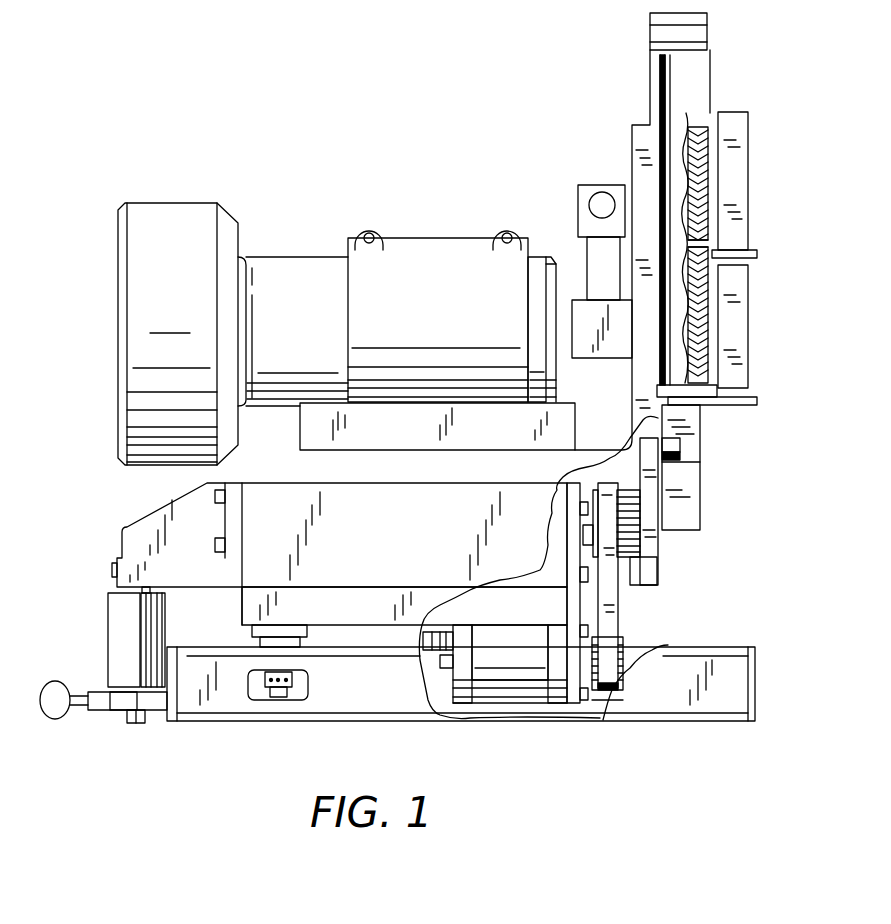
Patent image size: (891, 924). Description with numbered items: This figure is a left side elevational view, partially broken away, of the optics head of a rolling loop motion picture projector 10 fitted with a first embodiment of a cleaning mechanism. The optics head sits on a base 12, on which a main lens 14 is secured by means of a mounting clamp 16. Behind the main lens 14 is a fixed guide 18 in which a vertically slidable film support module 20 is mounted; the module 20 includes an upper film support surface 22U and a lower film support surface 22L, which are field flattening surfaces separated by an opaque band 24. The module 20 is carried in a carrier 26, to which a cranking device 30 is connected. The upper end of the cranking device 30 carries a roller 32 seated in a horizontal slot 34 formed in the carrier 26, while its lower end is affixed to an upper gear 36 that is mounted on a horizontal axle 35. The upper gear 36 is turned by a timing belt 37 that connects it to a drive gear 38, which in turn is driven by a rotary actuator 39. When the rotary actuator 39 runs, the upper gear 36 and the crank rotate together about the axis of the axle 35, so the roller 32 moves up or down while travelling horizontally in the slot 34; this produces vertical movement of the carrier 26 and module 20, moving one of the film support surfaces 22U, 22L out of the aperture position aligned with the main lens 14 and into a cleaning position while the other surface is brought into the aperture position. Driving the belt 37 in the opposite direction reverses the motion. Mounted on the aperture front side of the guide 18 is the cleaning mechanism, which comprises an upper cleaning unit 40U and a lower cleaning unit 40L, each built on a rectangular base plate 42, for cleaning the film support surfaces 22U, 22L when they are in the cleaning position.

The rolling loop motion picture projector 10 is at (508, 205).
The base 12 is at (258, 726).
The main lens 14 is at (178, 218).
The mounting clamp 16 is at (437, 250).
The fixed guide 18 is at (634, 142).
The film support module 20 is at (712, 40).
The upper film support surface 22U is at (712, 155).
The lower film support surface 22L is at (712, 320).
The opaque band 24 is at (700, 272).
The carrier 26 is at (687, 102).
The cranking device 30 is at (646, 558).
The roller 32 is at (681, 461).
The horizontal slot 34 is at (681, 455).
The horizontal axle 35 is at (592, 521).
The upper gear 36 is at (630, 566).
The timing belt 37 is at (603, 692).
The drive gear 38 is at (628, 690).
The rotary actuator 39 is at (528, 702).
The upper cleaning unit 40U is at (750, 228).
The lower cleaning unit 40L is at (752, 384).
The rectangular base plate 42 is at (738, 190).